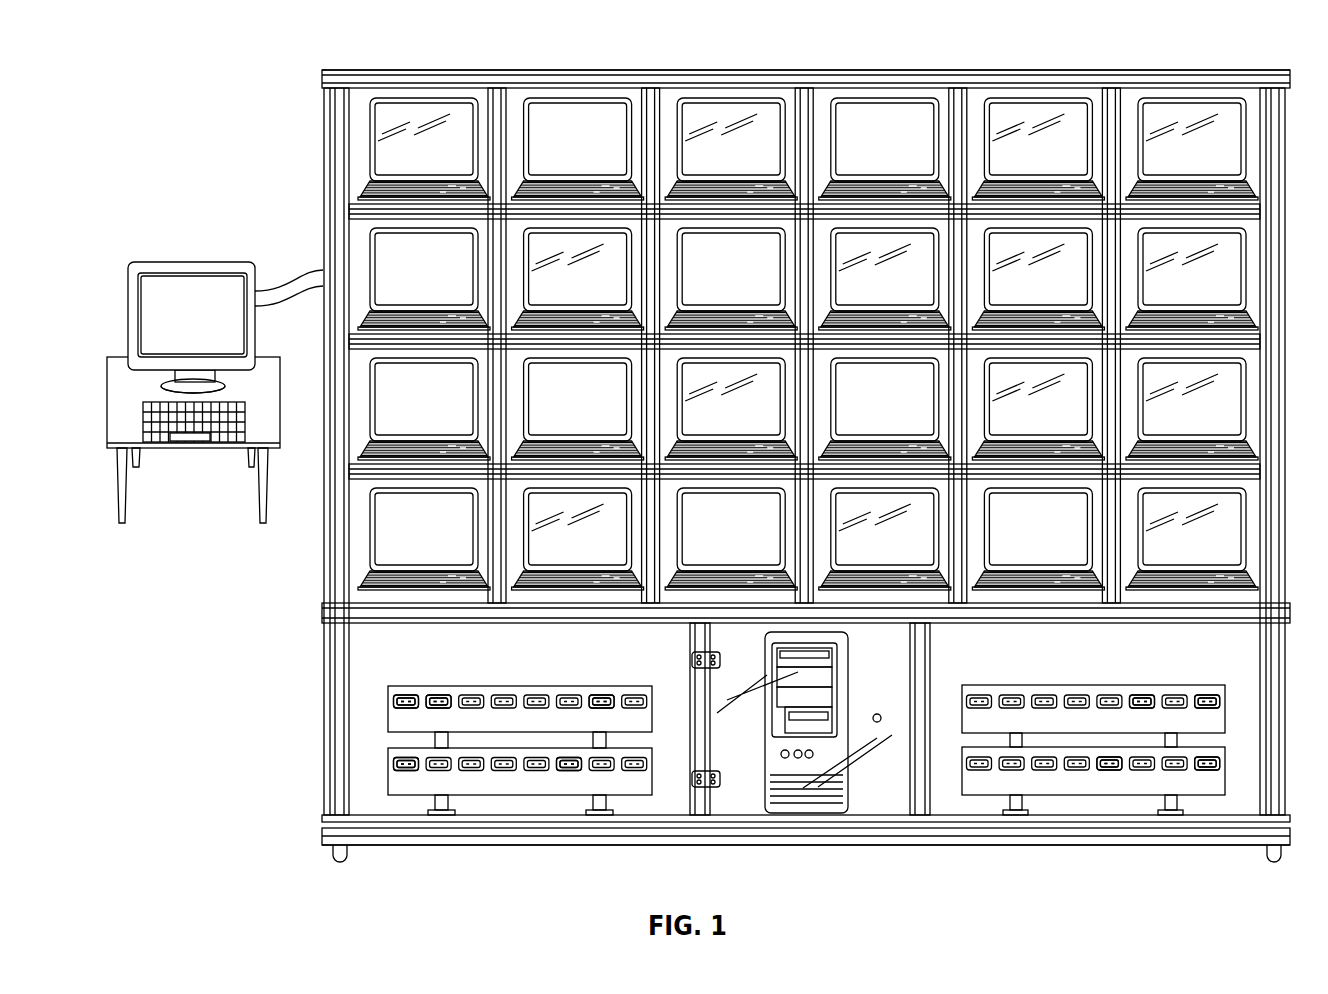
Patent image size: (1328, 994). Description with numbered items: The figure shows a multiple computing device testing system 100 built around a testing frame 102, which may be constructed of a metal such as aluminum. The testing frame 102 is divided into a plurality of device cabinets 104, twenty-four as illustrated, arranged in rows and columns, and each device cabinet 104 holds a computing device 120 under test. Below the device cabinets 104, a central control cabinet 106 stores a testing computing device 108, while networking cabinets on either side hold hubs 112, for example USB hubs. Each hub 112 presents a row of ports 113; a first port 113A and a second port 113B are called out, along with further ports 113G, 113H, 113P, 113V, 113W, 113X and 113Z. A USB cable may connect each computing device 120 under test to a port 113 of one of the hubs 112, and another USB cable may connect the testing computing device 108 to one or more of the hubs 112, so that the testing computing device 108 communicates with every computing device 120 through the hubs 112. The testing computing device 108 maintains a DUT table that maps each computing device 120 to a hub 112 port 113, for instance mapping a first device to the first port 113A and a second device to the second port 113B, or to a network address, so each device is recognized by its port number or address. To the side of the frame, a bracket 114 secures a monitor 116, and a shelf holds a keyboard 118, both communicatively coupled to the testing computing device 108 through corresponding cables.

The testing system 100 is at (1093, 55).
The testing frame 102 is at (1250, 69).
The device cabinet 104 is at (1250, 125).
The control cabinet 106 is at (742, 790).
The testing computing device 108 is at (848, 676).
The hub 112 is at (818, 765).
The port 113 is at (637, 696).
The first port 113A is at (405, 694).
The second port 113B is at (433, 694).
The electrical outlet 113G is at (598, 696).
The electrical outlet 113H is at (572, 774).
The electrical outlet 113P is at (403, 774).
The electrical outlet 113V is at (1140, 695).
The electrical outlet 113W is at (1205, 695).
The electrical outlet 113X is at (1207, 770).
The electrical outlet 113Z is at (1108, 770).
The bracket 114 is at (286, 276).
The monitor 116 is at (209, 361).
The keyboard 118 is at (245, 423).
The computing device under test 120 is at (455, 121).